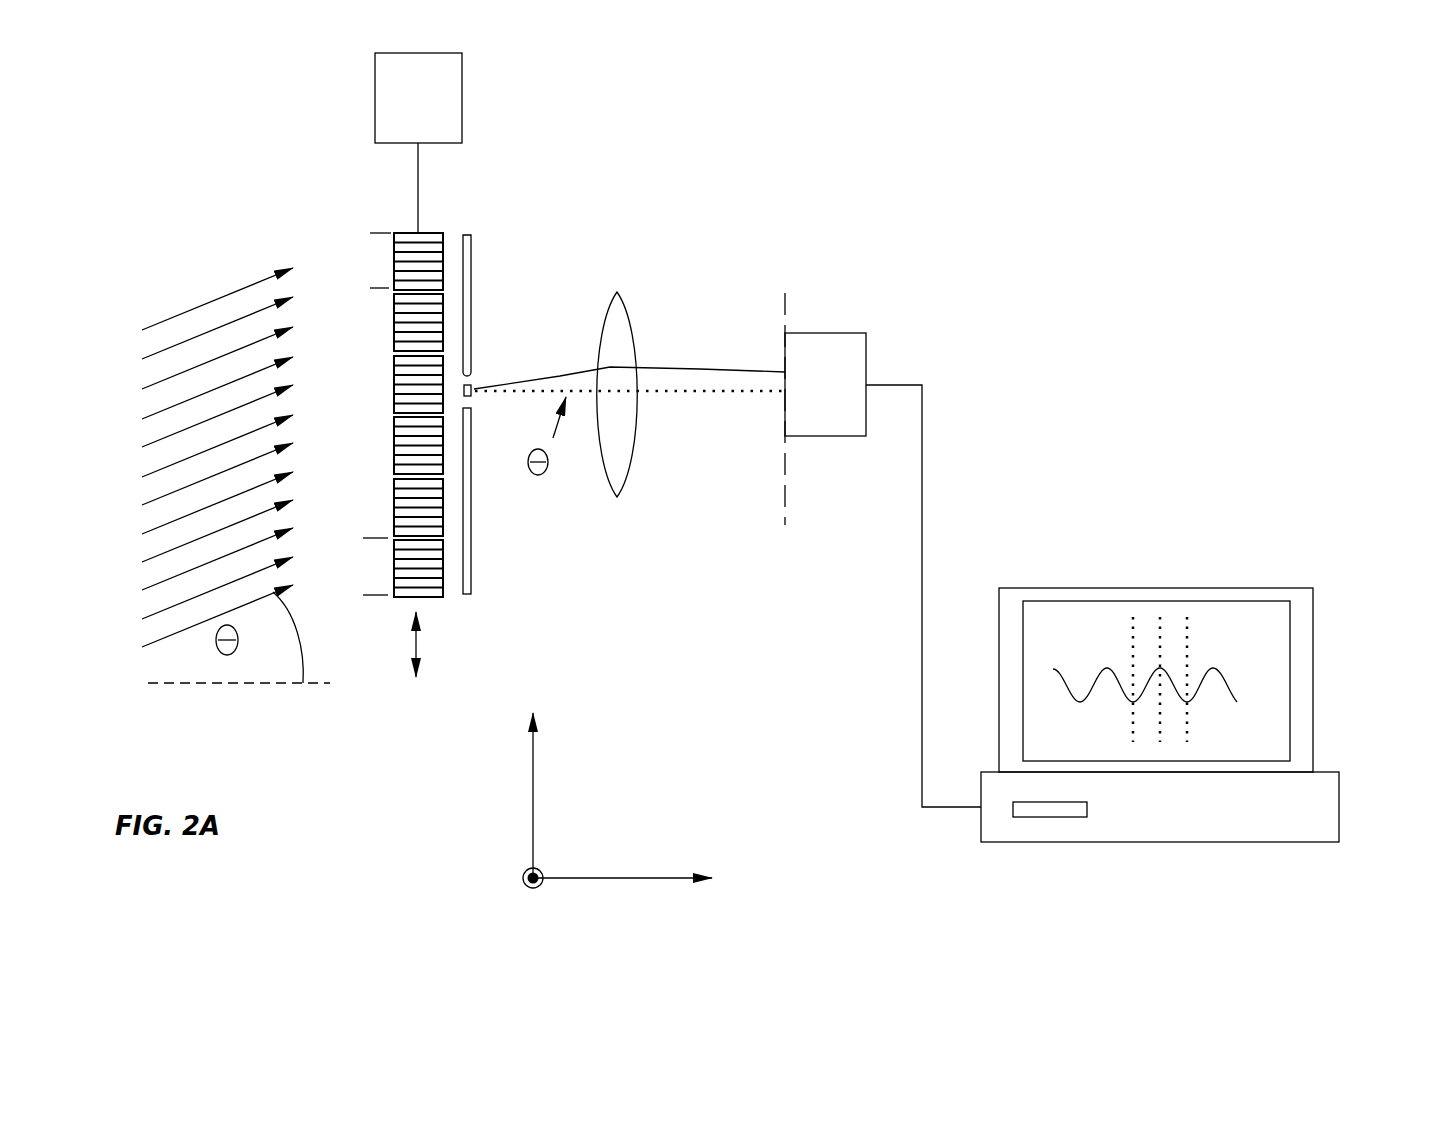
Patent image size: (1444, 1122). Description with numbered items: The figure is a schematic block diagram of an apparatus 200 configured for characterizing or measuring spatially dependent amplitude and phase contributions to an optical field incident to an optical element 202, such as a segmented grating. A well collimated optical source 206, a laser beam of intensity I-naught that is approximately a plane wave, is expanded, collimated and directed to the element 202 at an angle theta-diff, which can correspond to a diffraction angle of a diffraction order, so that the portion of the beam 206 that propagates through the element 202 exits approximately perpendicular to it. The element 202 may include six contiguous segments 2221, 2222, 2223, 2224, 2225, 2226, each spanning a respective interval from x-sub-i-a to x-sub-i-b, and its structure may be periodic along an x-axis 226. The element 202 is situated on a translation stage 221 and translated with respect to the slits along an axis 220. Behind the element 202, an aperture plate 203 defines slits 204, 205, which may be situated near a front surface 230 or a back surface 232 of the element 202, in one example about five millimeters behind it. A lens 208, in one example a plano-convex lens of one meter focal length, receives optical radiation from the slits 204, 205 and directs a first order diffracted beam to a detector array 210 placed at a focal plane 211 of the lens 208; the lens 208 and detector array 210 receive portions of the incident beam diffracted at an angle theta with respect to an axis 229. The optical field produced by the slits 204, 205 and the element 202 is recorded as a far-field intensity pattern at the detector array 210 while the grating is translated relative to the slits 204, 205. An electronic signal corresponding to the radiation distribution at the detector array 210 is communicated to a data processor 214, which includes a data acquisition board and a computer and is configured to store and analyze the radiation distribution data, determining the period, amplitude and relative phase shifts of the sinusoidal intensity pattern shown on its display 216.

The apparatus 200 is at (1062, 345).
The optical element 202 is at (440, 206).
The aperture plate 203 is at (471, 530).
The slit 204 is at (471, 374).
The slit 205 is at (464, 408).
The optical source 206 is at (172, 297).
The lens 208 is at (619, 292).
The detector array 210 is at (866, 349).
The focal plane 211 is at (784, 512).
The data processor 214 is at (1339, 817).
The display 216 is at (1270, 618).
The axis 220 is at (413, 649).
The translation stage 221 is at (462, 93).
The segment 2221 is at (393, 260).
The segment 2222 is at (393, 328).
The segment 2223 is at (393, 402).
The segment 2224 is at (393, 462).
The segment 2225 is at (393, 510).
The segment 2226 is at (443, 596).
The x-axis 226 is at (535, 790).
The axis 229 is at (690, 390).
The front surface 230 is at (408, 407).
The back surface 232 is at (445, 246).